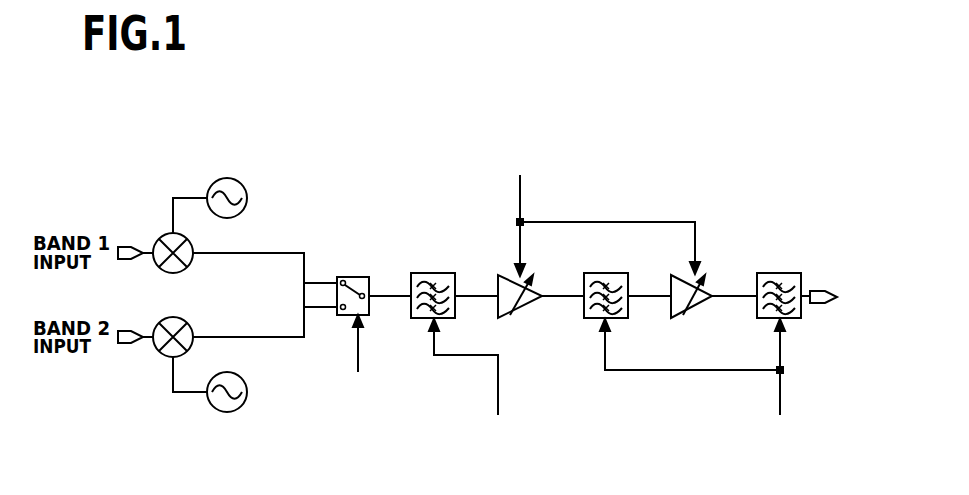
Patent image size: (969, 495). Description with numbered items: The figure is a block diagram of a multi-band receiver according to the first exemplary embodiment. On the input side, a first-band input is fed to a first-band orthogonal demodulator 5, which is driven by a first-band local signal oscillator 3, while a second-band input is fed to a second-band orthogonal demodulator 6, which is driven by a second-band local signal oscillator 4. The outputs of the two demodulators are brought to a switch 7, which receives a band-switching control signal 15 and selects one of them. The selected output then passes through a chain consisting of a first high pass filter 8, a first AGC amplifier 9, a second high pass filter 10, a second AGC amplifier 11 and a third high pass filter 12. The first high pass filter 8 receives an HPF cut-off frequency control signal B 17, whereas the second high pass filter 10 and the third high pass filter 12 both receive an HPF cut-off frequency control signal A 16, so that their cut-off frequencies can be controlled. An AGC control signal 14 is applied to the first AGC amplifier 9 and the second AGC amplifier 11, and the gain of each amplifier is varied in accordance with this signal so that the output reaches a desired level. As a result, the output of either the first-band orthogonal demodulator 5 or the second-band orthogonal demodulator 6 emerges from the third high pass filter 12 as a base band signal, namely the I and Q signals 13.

The BAND 1 local signal oscillator 3 is at (240, 184).
The BAND 2 local signal oscillator 4 is at (240, 406).
The BAND 1 orthogonal demodulator 5 is at (190, 266).
The BAND 2 orthogonal demodulator 6 is at (190, 324).
The switch 7 is at (362, 274).
The first high pass filter 8 is at (450, 271).
The first AGC amplifier 9 is at (526, 308).
The second high pass filter 10 is at (622, 271).
The second AGC amplifier 11 is at (700, 312).
The third high pass filter 12 is at (795, 271).
The I and Q signals 13 is at (837, 297).
The AGC control signal 14 is at (605, 214).
The BAND-switching control signal 15 is at (357, 358).
The HPF cut-off frequency control signal A 16 is at (702, 379).
The HPF cut-off frequency control signal B 17 is at (475, 379).